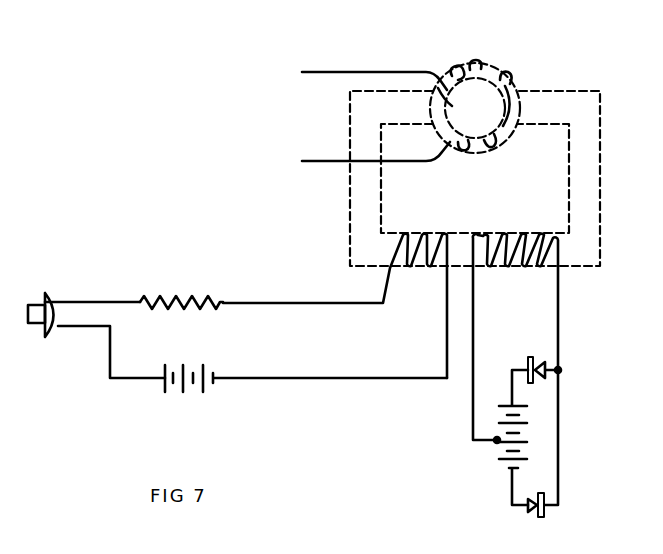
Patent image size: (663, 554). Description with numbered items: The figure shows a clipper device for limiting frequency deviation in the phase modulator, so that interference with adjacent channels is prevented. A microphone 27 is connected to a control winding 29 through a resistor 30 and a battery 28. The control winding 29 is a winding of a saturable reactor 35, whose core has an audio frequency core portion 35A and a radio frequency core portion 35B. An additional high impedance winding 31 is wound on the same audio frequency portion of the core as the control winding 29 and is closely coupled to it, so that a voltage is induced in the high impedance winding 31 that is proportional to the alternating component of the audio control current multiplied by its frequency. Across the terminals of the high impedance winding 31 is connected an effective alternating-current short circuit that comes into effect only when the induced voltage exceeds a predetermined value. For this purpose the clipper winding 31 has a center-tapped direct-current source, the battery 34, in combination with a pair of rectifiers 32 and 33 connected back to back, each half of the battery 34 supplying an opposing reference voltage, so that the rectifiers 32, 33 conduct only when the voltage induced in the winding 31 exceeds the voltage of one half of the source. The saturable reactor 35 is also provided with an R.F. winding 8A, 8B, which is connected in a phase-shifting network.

The R.F. winding 8A is at (477, 62).
The R.F. winding 8B is at (497, 145).
The saturable reactor 35 is at (488, 118).
The audio frequency core portion 35A is at (468, 232).
The radio frequency core portion 35B is at (517, 88).
The control winding 29 is at (407, 230).
The high impedance winding 31 is at (522, 270).
The microphone 27 is at (53, 293).
The resistor 30 is at (190, 300).
The battery 28 is at (183, 385).
The rectifier 32 is at (537, 356).
The rectifier 33 is at (552, 497).
The battery 34 is at (497, 452).